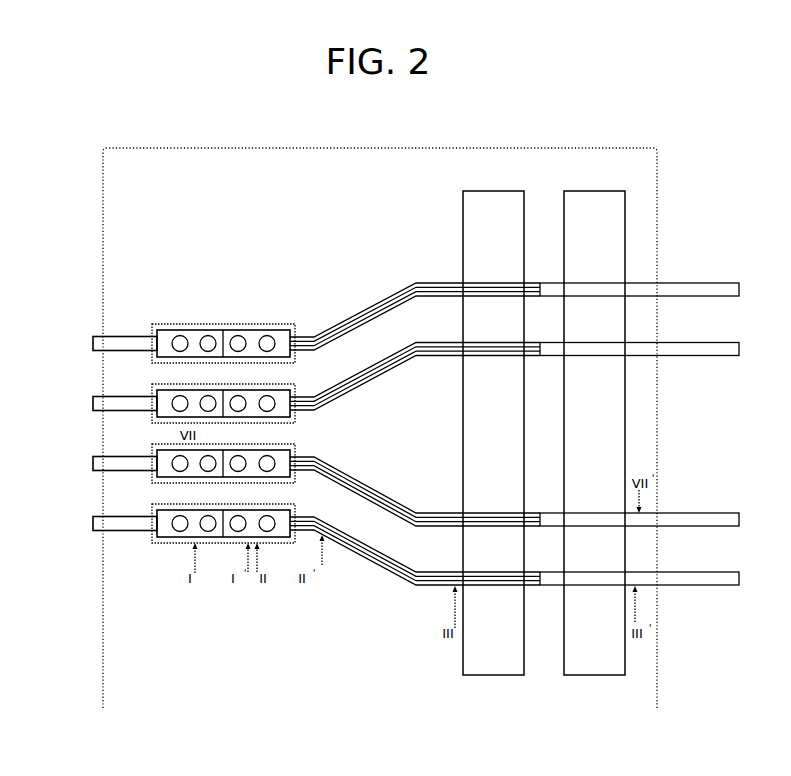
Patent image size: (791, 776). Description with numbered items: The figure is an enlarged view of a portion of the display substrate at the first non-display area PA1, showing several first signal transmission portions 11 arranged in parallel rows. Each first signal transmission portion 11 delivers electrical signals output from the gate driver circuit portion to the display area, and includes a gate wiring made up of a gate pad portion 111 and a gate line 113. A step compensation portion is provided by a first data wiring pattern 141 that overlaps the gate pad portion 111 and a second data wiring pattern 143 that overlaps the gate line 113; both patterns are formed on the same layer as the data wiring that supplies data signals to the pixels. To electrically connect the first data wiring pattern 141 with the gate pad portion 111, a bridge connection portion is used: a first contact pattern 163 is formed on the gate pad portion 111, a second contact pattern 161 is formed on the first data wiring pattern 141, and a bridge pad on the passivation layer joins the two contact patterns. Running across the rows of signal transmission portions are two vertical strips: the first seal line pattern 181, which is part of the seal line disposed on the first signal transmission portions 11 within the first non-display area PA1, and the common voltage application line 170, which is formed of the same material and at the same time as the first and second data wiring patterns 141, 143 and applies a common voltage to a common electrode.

The first signal transmission portion 11 is at (80, 457).
The gate pad portion 111 is at (170, 545).
The gate line 113 is at (415, 567).
The first data wiring pattern 141 is at (265, 545).
The second data wiring pattern 143 is at (390, 571).
The second contact pattern 161 is at (238, 543).
The first contact pattern 163 is at (212, 543).
The common voltage application line 170 is at (590, 677).
The first seal line pattern 181 is at (490, 677).
The first non-display area PA1 is at (366, 146).